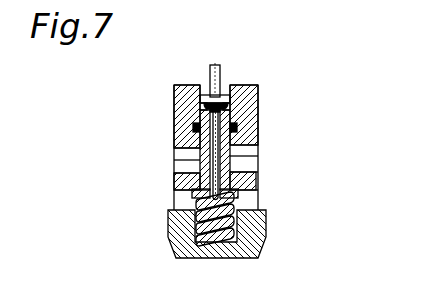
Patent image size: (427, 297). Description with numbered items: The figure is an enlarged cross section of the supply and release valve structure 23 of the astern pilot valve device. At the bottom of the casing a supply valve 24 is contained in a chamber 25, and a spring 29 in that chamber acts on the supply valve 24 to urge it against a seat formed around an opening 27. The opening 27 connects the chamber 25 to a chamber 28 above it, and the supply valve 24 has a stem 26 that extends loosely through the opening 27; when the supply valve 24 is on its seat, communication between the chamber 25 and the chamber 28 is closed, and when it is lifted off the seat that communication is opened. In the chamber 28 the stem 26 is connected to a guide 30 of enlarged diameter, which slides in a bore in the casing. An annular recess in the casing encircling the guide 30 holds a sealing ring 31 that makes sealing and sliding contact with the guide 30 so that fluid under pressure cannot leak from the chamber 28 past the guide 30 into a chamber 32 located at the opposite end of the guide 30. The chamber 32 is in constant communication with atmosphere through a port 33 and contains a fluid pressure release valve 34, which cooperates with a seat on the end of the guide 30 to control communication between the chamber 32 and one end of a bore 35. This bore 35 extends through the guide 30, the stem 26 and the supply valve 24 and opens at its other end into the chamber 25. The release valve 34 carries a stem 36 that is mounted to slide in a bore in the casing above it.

The supply and release valve structure 23 is at (248, 139).
The supply valve 24 is at (197, 192).
The chamber 25 is at (257, 205).
The stem 26 is at (257, 166).
The opening 27 is at (190, 175).
The chamber 28 is at (256, 153).
The spring 29 is at (225, 215).
The guide 30 is at (205, 148).
The sealing ring 31 is at (196, 127).
The chamber 32 is at (257, 103).
The port 33 is at (227, 97).
The fluid pressure release valve 34 is at (201, 105).
The bore 35 is at (208, 155).
The stem 36 is at (217, 76).